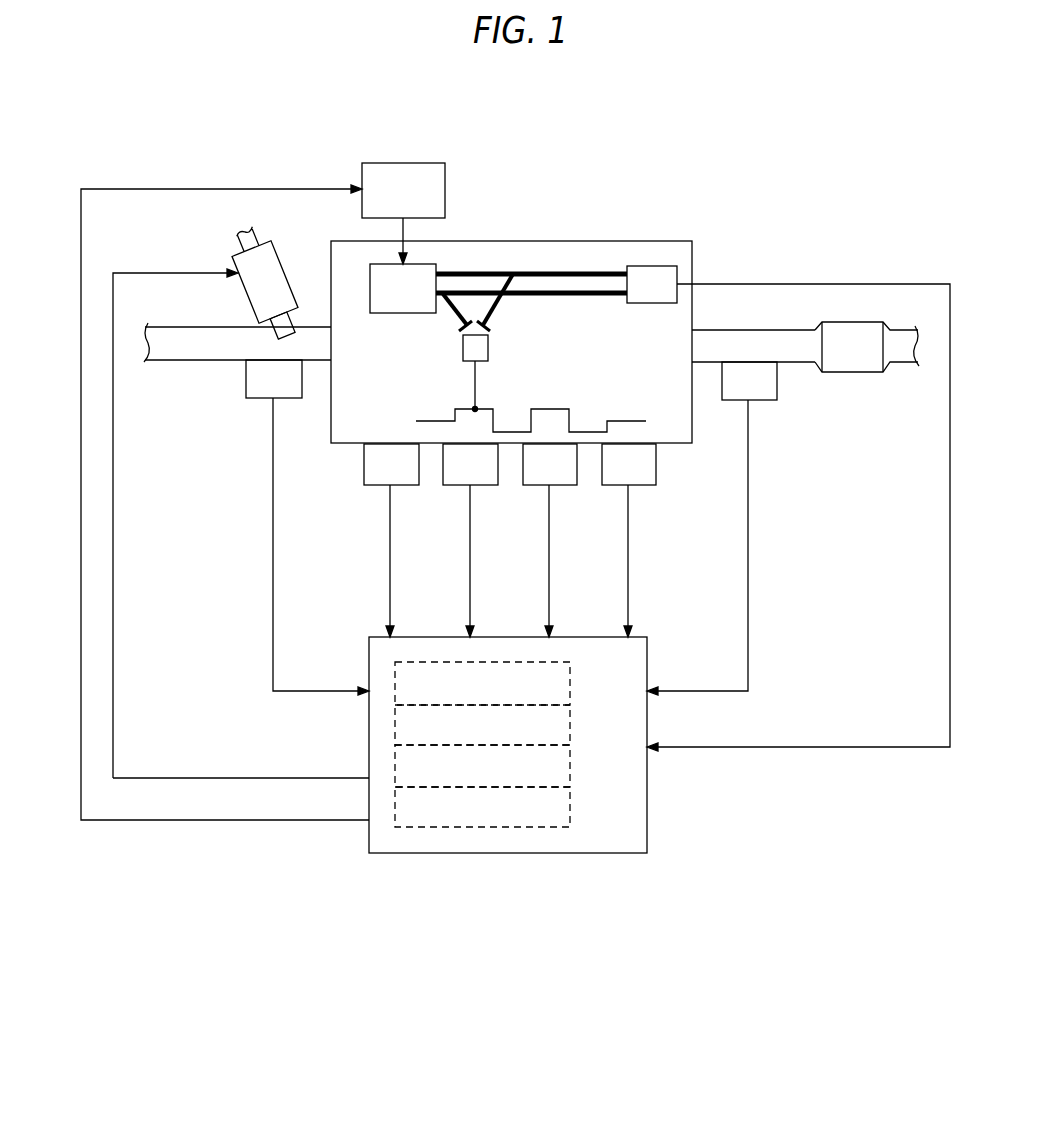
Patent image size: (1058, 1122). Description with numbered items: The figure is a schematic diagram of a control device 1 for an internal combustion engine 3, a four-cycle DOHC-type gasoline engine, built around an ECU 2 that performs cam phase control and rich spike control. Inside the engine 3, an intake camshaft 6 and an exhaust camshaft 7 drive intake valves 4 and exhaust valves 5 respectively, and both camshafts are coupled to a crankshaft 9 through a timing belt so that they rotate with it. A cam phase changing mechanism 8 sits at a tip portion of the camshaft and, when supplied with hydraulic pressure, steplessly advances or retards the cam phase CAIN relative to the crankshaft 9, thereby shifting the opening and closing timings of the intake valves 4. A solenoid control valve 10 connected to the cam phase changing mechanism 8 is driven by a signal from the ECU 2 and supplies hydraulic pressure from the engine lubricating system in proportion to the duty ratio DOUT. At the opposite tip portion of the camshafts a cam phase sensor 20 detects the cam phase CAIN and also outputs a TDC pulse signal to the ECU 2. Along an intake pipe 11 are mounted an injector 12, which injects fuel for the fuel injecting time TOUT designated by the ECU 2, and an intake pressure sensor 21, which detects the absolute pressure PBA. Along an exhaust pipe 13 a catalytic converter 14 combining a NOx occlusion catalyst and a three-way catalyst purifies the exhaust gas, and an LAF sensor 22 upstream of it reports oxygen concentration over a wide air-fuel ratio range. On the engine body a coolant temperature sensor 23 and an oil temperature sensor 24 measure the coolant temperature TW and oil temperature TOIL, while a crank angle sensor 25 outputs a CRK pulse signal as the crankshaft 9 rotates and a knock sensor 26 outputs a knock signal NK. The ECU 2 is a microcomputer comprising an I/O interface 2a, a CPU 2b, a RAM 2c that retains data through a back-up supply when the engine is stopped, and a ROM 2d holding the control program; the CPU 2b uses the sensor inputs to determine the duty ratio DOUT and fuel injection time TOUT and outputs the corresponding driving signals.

The control device 1 is at (464, 928).
The ECU 2 is at (369, 745).
The I/O interface 2a is at (572, 684).
The CPU 2b is at (572, 725).
The RAM 2c is at (572, 766).
The ROM 2d is at (572, 807).
The internal combustion engine 3 is at (547, 241).
The intake valves 4 is at (453, 315).
The exhaust valves 5 is at (498, 317).
The intake camshaft 6 is at (602, 297).
The exhaust camshaft 7 is at (578, 277).
The cam phase changing mechanism 8 is at (398, 313).
The crankshaft 9 is at (553, 409).
The solenoid control valve 10 is at (400, 163).
The intake pipe 11 is at (190, 360).
The injector 12 is at (283, 263).
The exhaust pipe 13 is at (752, 330).
The catalytic converter 14 is at (853, 372).
The cam phase sensor 20 is at (652, 303).
The intake pressure sensor 21 is at (262, 398).
The LAF sensor 22 is at (760, 400).
The coolant temperature sensor 23 is at (380, 485).
The oil temperature sensor 24 is at (460, 485).
The crank angle sensor 25 is at (539, 485).
The knock sensor 26 is at (619, 485).